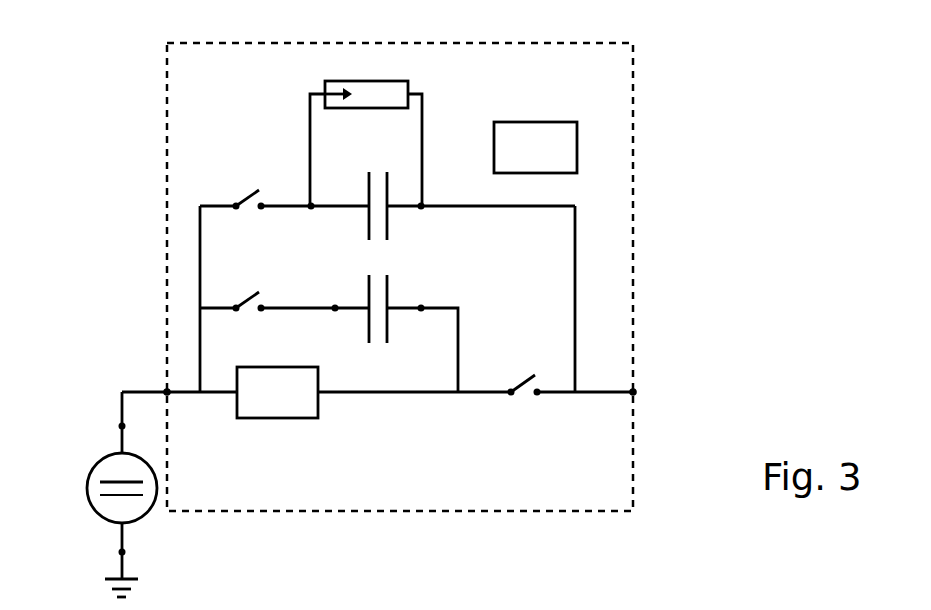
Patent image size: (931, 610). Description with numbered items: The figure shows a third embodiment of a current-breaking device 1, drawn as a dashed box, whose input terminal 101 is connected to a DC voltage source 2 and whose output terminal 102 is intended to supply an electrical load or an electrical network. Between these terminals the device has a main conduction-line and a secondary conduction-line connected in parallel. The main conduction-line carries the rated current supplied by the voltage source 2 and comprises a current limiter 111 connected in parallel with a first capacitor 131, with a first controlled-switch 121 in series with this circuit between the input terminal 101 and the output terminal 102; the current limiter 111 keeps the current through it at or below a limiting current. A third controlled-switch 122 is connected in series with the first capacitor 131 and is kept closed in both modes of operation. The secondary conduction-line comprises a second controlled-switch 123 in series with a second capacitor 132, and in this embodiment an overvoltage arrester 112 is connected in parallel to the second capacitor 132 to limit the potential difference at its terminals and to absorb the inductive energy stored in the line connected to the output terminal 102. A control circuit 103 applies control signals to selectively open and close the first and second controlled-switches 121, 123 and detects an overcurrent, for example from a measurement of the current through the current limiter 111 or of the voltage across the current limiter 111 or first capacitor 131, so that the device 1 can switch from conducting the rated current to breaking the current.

The current-breaking device 1 is at (165, 277).
The DC voltage source 2 is at (87, 488).
The input terminal 101 is at (167, 397).
The output terminal 102 is at (631, 400).
The control circuit 103 is at (535, 122).
The current limiter 111 is at (278, 420).
The overvoltage arrester 112 is at (368, 80).
The first controlled-switch 121 is at (526, 395).
The third controlled-switch 122 is at (248, 300).
The second controlled-switch 123 is at (248, 196).
The first capacitor 131 is at (362, 300).
The second capacitor 132 is at (362, 196).